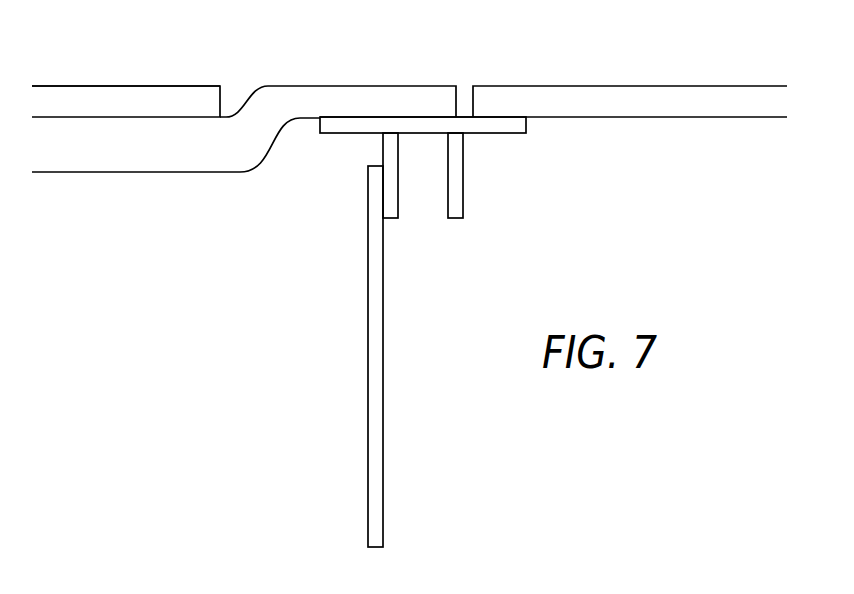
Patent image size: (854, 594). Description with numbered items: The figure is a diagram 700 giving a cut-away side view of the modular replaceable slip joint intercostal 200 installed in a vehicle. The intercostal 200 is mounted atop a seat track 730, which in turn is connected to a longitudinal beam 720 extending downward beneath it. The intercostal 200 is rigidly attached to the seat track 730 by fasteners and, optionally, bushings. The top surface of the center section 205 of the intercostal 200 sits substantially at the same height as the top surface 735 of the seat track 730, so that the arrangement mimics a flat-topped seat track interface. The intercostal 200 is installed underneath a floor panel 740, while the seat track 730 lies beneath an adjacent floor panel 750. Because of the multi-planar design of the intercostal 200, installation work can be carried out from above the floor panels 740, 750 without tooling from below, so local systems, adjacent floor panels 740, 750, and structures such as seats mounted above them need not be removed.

The diagram 700 is at (448, 410).
The longitudinal beam 720 is at (368, 367).
The seat track 730 is at (462, 163).
The top surface 735 is at (422, 117).
The floor panel 740 is at (65, 97).
The floor panel 750 is at (545, 87).
The center section 205 is at (135, 117).
The modular replaceable slip joint intercostal 200 is at (118, 153).